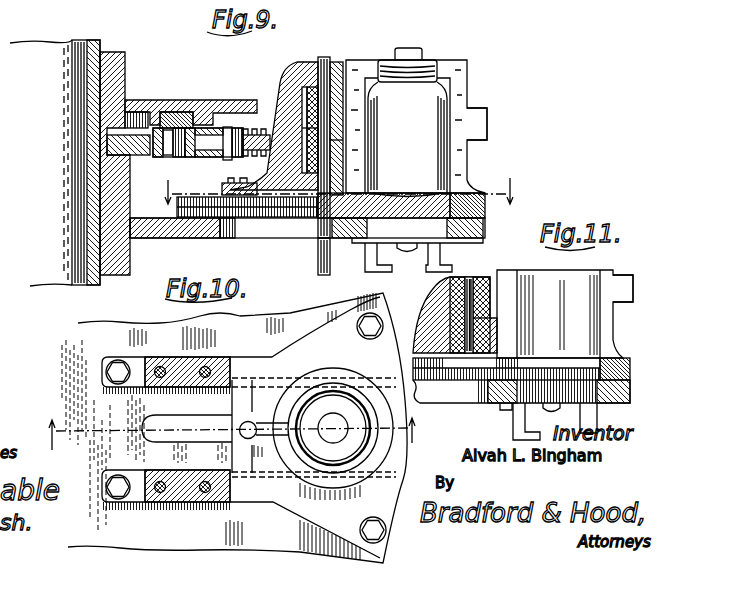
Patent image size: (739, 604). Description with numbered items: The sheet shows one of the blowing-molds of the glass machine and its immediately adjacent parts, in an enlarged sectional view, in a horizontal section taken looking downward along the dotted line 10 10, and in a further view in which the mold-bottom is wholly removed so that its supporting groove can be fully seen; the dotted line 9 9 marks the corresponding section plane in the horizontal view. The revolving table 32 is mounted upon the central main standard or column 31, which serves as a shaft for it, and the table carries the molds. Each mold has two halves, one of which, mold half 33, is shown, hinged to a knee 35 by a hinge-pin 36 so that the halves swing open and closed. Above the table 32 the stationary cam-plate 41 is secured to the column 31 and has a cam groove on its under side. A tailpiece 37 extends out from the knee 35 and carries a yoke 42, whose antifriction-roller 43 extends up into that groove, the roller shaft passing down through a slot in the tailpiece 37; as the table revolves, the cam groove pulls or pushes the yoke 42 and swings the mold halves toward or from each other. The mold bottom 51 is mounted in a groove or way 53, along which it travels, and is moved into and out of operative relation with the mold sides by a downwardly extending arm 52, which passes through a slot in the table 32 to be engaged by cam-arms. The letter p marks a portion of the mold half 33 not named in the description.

In FIG. 9, the central main standard or column 31 is at (100, 41).
In FIG. 9, the revolving table 32 is at (182, 238).
In FIG. 10, the revolving table 32 is at (135, 325).
In FIG. 11, the revolving table 32 is at (497, 403).
In FIG. 9, the mold half 33 is at (458, 92).
In FIG. 11, the mold half 33 is at (618, 328).
In FIG. 9, the knee 35 is at (280, 83).
In FIG. 11, the knee 35 is at (427, 318).
In FIG. 9, the hinge-pin 36 is at (332, 57).
In FIG. 11, the hinge-pin 36 is at (467, 281).
In FIG. 9, the tailpiece 37 is at (143, 156).
In FIG. 9, the stationary cam-plate 41 is at (178, 100).
In FIG. 9, the yoke 42 is at (202, 157).
In FIG. 9, the antifriction-roller 43 is at (190, 112).
In FIG. 9, the mold bottom 51 is at (416, 193).
In FIG. 10, the mold bottom 51 is at (314, 428).
In FIG. 11, the mold bottom 51 is at (506, 369).
In FIG. 9, the arm 52 is at (318, 258).
In FIG. 10, the arm 52 is at (257, 436).
In FIG. 9, the groove or way 53 is at (482, 206).
In FIG. 11, the groove or way 53 is at (632, 381).
In FIG. 9, the port p is at (488, 120).
In FIG. 11, the port p is at (635, 292).
In FIG. 10, the section line 9- 9 is at (232, 434).
In FIG. 9, the section line 10- 10 is at (337, 191).